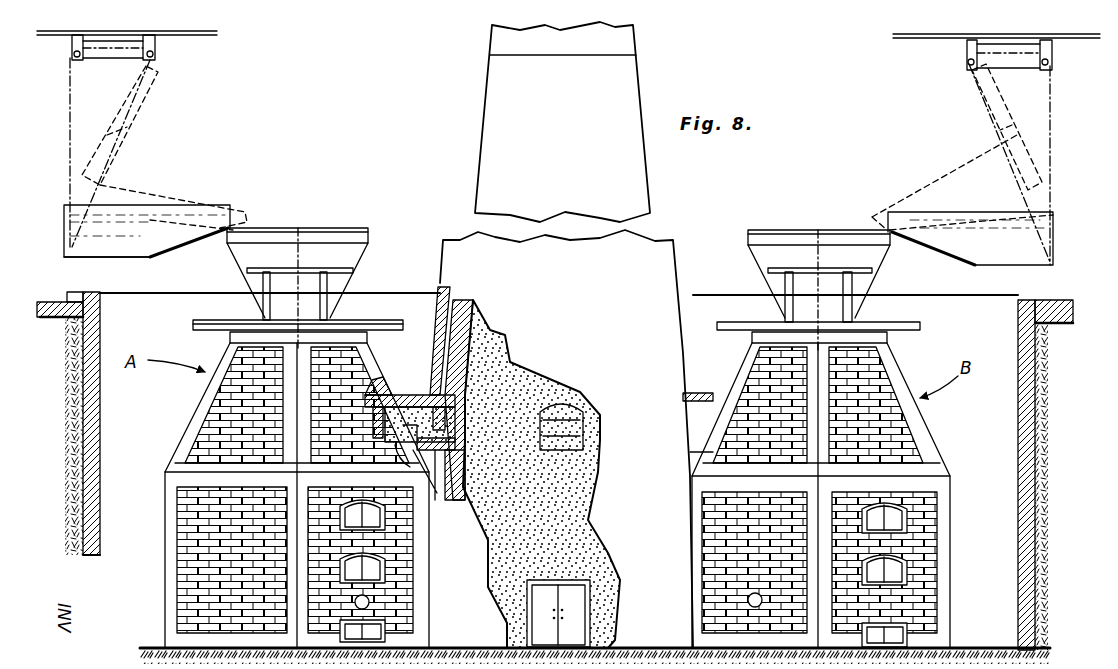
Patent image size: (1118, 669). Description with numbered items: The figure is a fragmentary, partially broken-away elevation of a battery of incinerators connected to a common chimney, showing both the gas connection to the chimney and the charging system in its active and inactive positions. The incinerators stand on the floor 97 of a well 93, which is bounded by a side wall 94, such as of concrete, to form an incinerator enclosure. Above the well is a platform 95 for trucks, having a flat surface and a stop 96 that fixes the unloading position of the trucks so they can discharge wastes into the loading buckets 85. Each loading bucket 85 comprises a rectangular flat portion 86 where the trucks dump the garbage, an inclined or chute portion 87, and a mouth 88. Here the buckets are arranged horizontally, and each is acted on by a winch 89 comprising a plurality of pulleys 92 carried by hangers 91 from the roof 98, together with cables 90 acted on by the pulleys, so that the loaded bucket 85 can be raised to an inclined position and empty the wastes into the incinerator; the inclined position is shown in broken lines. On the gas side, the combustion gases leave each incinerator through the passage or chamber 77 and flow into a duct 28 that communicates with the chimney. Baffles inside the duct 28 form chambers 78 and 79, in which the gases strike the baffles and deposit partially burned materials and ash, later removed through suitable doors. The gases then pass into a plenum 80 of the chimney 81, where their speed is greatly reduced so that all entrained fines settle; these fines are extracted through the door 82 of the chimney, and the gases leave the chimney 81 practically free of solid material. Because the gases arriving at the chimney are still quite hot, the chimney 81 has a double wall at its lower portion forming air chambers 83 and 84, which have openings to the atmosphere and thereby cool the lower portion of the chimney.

The duct 28 is at (388, 393).
The passage or chamber 77 is at (410, 470).
The chamber 78 is at (420, 418).
The chamber 79 is at (450, 425).
The plenum 80 is at (532, 530).
The chimney 81 is at (652, 288).
The door 82 is at (580, 608).
The air chamber 83 is at (452, 312).
The air chamber 84 is at (456, 492).
The loading bucket 85 is at (78, 258).
The rectangular flat portion 86 is at (110, 257).
The inclined or chute portion 87 is at (178, 247).
The mouth 88 is at (218, 200).
The winch 89 is at (160, 60).
The cable 90 is at (130, 126).
The hanger 91 is at (155, 41).
The pulley 92 is at (72, 56).
The well 93 is at (118, 545).
The side wall 94 is at (96, 420).
The platform for trucks 95 is at (42, 310).
The stop 96 is at (57, 300).
The floor 97 is at (466, 646).
The roof 98 is at (56, 35).